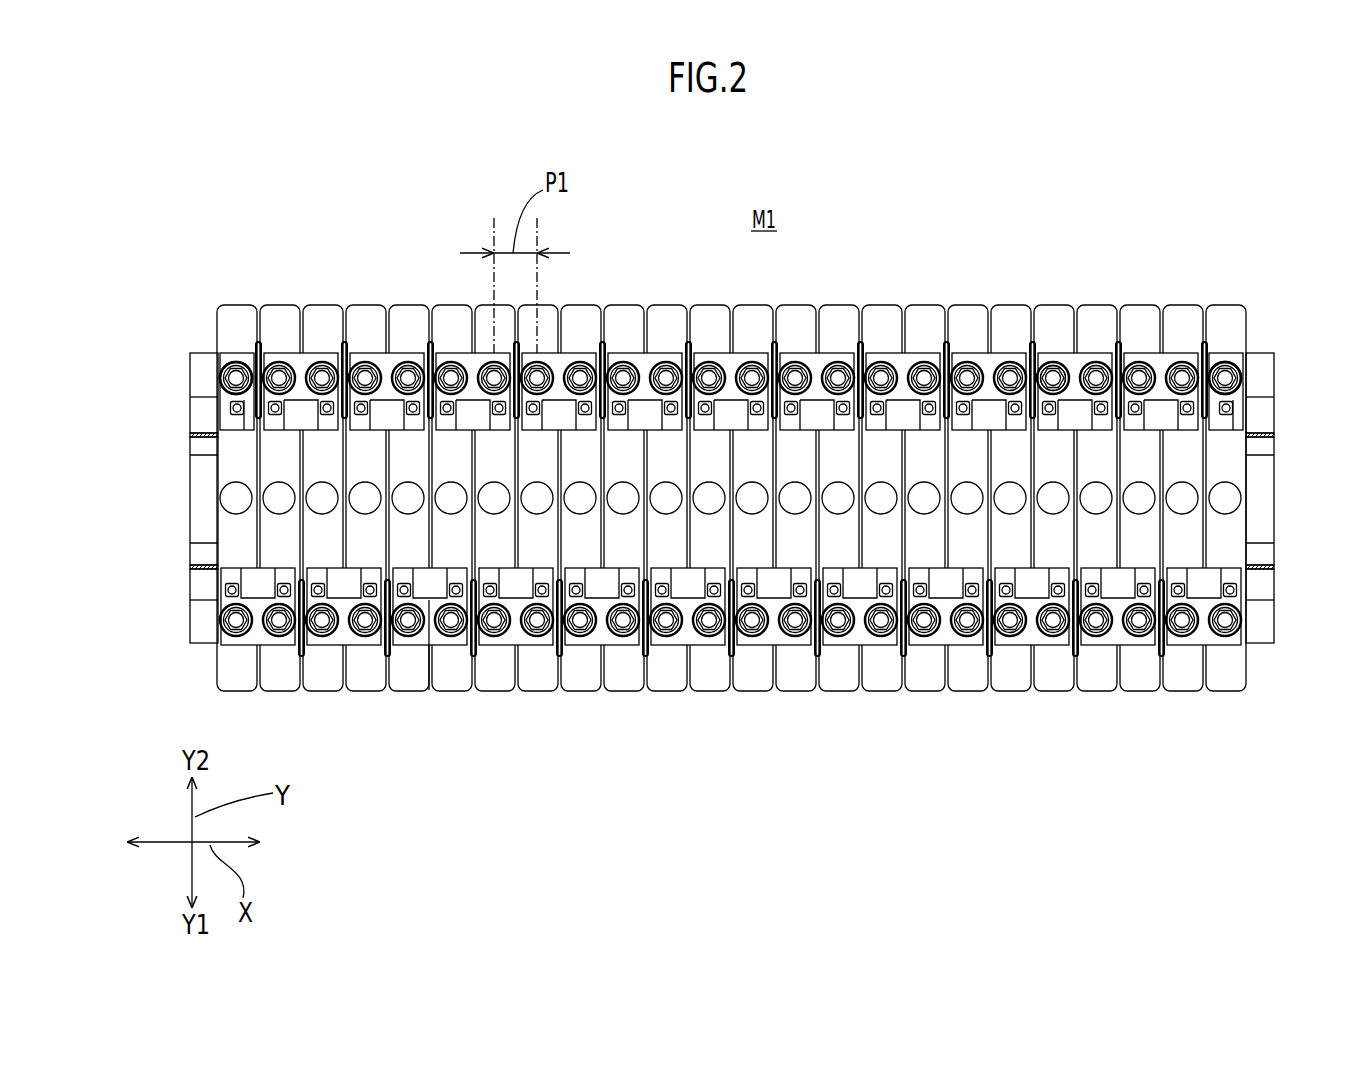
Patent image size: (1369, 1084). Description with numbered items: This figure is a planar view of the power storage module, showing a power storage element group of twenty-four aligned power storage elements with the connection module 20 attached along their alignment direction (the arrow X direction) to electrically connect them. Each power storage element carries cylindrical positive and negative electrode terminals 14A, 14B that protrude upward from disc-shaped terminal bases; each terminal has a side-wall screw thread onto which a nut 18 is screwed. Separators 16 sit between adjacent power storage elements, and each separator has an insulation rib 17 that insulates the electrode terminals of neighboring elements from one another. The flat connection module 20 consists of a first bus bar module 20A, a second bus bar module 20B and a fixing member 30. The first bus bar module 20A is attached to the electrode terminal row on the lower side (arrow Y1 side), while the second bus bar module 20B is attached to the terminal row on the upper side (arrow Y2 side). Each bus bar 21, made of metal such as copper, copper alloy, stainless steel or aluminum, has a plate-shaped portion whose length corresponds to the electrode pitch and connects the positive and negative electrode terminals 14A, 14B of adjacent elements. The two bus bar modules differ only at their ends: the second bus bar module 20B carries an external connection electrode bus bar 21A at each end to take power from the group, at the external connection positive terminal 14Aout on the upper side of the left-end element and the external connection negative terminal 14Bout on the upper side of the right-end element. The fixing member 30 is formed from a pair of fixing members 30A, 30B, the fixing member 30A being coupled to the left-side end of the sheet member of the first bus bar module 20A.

The positive electrode terminal 14A is at (923, 372).
The negative electrode terminal 14B is at (880, 372).
The external connection positive terminal 14Aout is at (236, 378).
The external connection negative terminal 14Bout is at (1225, 380).
The separator 16 is at (430, 691).
The insulation rib 17 is at (474, 652).
The nut 18 is at (1058, 370).
The connection module 20 is at (82, 380).
The first bus bar module 20A is at (176, 617).
The second bus bar module 20B is at (176, 381).
The bus bar 21 is at (1178, 351).
The external connection electrode bus bar 21A is at (237, 351).
The fixing member 30 is at (717, 501).
The fixing member 30A is at (199, 510).
The fixing member 30B is at (1264, 510).